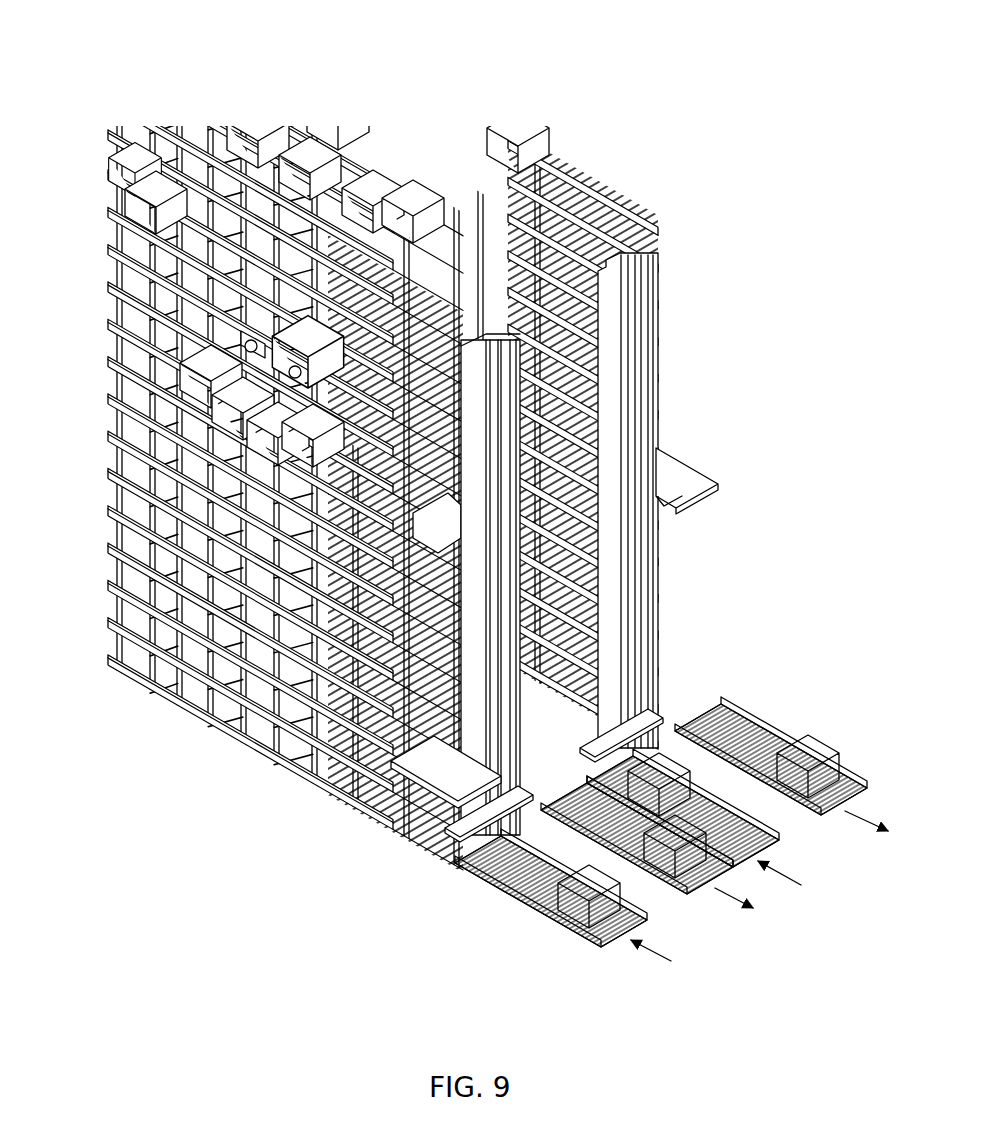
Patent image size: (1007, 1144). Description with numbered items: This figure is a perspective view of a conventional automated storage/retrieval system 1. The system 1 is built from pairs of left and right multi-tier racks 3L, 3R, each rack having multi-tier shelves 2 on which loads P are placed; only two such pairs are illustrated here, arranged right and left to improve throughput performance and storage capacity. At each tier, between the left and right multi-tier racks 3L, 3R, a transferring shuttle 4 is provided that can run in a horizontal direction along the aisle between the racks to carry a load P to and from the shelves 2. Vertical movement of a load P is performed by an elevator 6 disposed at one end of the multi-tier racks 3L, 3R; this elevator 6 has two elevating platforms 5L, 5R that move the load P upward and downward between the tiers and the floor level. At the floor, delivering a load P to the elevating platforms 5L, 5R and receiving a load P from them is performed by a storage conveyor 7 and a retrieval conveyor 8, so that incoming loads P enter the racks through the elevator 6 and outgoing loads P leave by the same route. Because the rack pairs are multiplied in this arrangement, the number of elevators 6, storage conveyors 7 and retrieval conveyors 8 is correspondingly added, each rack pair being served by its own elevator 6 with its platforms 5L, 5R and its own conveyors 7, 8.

The automated storage/retrieval system 1 is at (462, 496).
The multi-tier shelves 2 is at (180, 287).
The left multi-tier rack 3L is at (249, 441).
The right multi-tier rack 3R is at (210, 114).
The transferring shuttle 4 is at (125, 425).
The left elevating platform 5L is at (580, 692).
The right elevating platform 5R is at (585, 403).
The elevator 6 is at (652, 703).
The storage conveyor 7 is at (605, 928).
The retrieval conveyor 8 is at (693, 880).
The load P is at (190, 368).